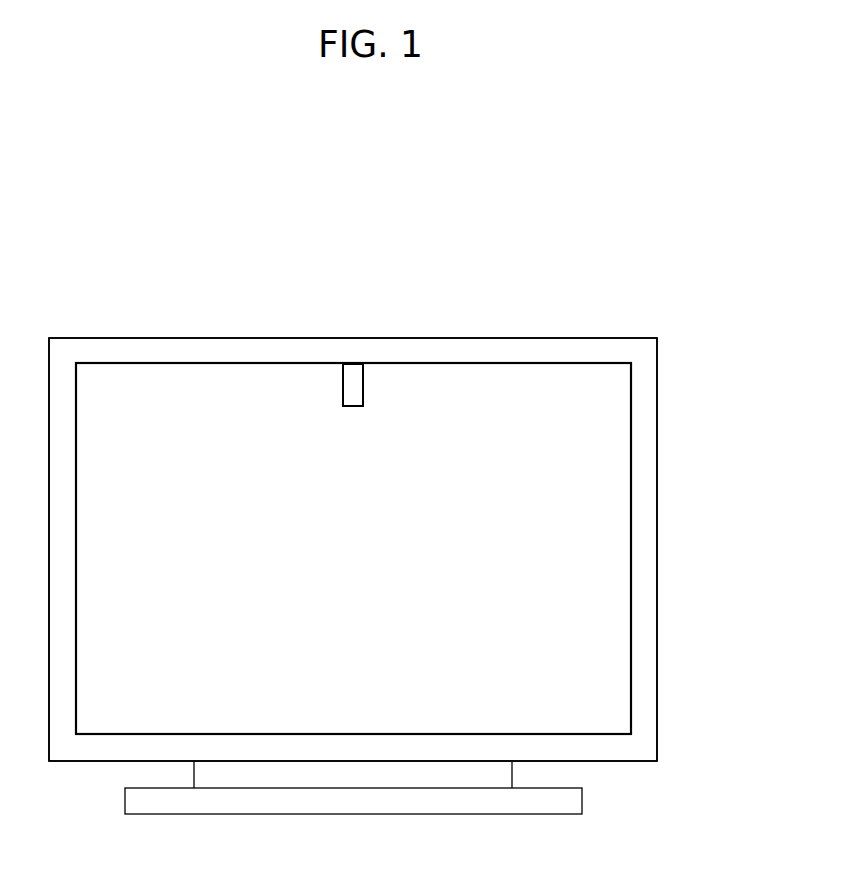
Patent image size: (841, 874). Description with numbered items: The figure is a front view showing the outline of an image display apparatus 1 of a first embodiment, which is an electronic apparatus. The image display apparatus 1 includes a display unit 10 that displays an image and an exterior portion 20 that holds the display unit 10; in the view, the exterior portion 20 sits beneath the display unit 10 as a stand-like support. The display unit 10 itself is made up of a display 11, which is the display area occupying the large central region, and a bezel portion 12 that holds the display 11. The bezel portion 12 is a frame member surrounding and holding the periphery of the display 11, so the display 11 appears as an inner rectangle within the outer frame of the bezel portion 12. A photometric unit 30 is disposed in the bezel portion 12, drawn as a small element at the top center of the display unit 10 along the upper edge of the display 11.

The image display apparatus 1 is at (474, 262).
The display unit 10 is at (303, 326).
The display 11 is at (144, 381).
The bezel portion 12 is at (270, 350).
The exterior portion 20 is at (503, 771).
The photometric unit 30 is at (355, 378).